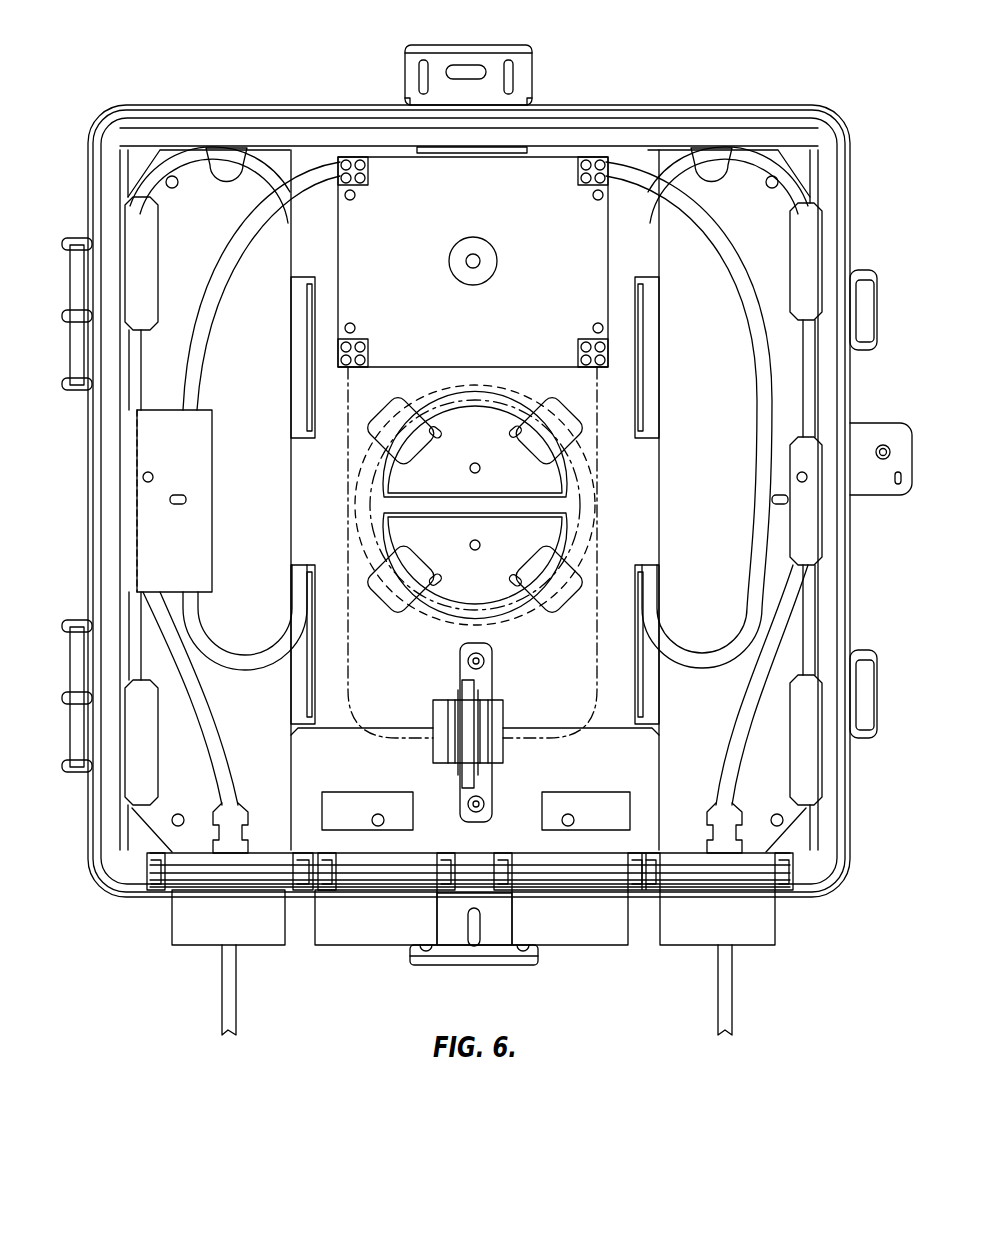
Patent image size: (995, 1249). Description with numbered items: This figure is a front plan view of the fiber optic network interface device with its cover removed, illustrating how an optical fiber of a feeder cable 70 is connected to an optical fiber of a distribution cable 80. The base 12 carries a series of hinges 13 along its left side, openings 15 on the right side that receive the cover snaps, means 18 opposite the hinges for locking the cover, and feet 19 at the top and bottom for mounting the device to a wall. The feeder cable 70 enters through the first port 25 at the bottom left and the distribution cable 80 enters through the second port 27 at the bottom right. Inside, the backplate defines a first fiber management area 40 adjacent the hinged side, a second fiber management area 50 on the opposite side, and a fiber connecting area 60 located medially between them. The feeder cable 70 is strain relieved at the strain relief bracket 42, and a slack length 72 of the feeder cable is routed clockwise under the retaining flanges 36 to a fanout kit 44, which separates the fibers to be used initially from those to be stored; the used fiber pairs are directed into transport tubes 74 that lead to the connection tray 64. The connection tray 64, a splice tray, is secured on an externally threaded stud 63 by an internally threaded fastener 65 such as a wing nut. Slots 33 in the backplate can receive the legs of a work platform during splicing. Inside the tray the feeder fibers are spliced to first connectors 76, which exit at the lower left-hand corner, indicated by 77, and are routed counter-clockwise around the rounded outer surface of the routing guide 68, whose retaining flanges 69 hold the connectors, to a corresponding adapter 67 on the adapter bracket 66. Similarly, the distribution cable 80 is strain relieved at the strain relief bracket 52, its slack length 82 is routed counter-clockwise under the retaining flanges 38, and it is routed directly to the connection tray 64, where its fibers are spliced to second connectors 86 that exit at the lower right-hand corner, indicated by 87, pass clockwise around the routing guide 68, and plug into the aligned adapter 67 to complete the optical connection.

The base 12 is at (205, 107).
The hinges 13 is at (68, 258).
The openings 15 is at (856, 304).
The means for locking the cover 18 is at (880, 496).
The feet 19 is at (512, 46).
The first port 25 is at (212, 940).
The second port 27 is at (750, 938).
The slots 33 is at (614, 796).
The retaining flanges 36 is at (145, 240).
The retaining flanges 38 is at (808, 222).
The first fiber management area 40 is at (249, 500).
The strain relief bracket 42 is at (225, 826).
The fanout kit 44 is at (148, 585).
The second fiber management area 50 is at (689, 443).
The strain relief bracket 52 is at (725, 822).
The fiber connecting area 60 is at (475, 755).
The externally threaded stud 63 is at (475, 265).
The connection tray 64 is at (473, 262).
The internally threaded fastener 65 is at (480, 240).
The adapter bracket 66 is at (490, 688).
The adapters 67 is at (437, 750).
The routing guide 68 is at (475, 504).
The retaining flanges 69 is at (386, 594).
The feeder cable 70 is at (240, 1022).
The slack length of feeder cable 72 is at (160, 170).
The transport tubes 74 is at (198, 327).
The first connectors 76 is at (345, 560).
The exit point of first connectors 77 is at (355, 358).
The distribution cable 80 is at (715, 1020).
The slack length of distribution cable 82 is at (795, 172).
The second connectors 86 is at (600, 466).
The exit point of second connectors 87 is at (580, 344).